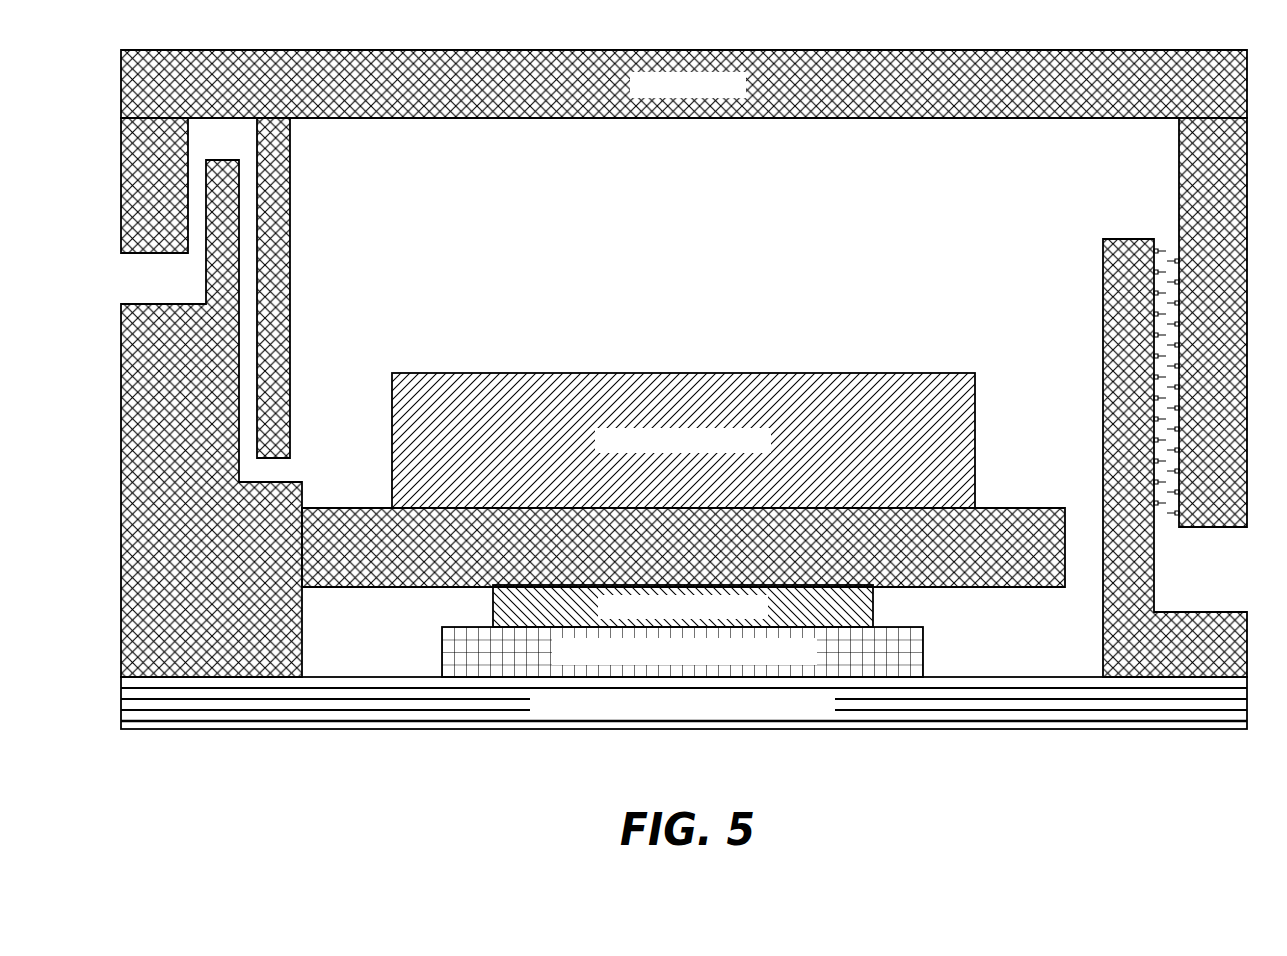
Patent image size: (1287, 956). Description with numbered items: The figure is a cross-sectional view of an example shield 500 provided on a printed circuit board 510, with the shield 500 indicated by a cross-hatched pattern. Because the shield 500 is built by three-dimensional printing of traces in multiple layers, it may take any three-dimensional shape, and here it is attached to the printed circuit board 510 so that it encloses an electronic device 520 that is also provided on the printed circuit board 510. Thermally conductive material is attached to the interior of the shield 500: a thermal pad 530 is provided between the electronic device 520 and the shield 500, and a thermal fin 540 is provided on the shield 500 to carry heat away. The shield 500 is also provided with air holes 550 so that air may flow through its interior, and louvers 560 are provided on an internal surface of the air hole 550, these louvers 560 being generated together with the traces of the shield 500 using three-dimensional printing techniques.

The shield 500 is at (121, 171).
The printed circuit board 510 is at (121, 702).
The electronic device 520 is at (442, 651).
The thermal pad 530 is at (493, 603).
The thermal fin 540 is at (392, 413).
The air hole 550 is at (143, 283).
The louvers 560 is at (1160, 251).